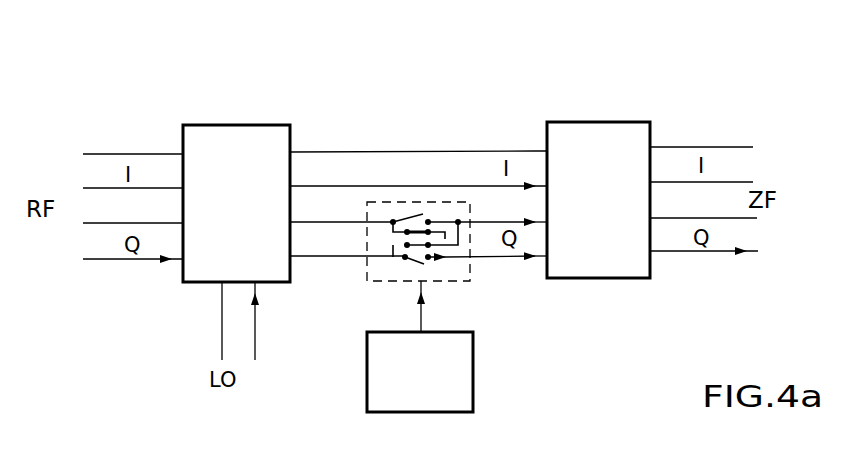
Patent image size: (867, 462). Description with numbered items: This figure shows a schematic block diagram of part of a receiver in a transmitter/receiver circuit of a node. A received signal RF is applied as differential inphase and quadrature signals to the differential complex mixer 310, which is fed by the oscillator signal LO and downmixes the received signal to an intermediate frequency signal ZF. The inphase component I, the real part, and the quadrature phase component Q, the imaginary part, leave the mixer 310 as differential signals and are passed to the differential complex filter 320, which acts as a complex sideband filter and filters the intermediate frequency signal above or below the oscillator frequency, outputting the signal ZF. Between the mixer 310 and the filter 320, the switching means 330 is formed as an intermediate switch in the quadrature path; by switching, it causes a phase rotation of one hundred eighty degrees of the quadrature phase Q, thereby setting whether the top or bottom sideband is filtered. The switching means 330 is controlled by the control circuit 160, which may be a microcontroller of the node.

The differential complex mixer 310 is at (246, 118).
The differential complex filter 320 is at (600, 120).
The switching means 330 is at (460, 290).
The control circuit 160 is at (473, 367).